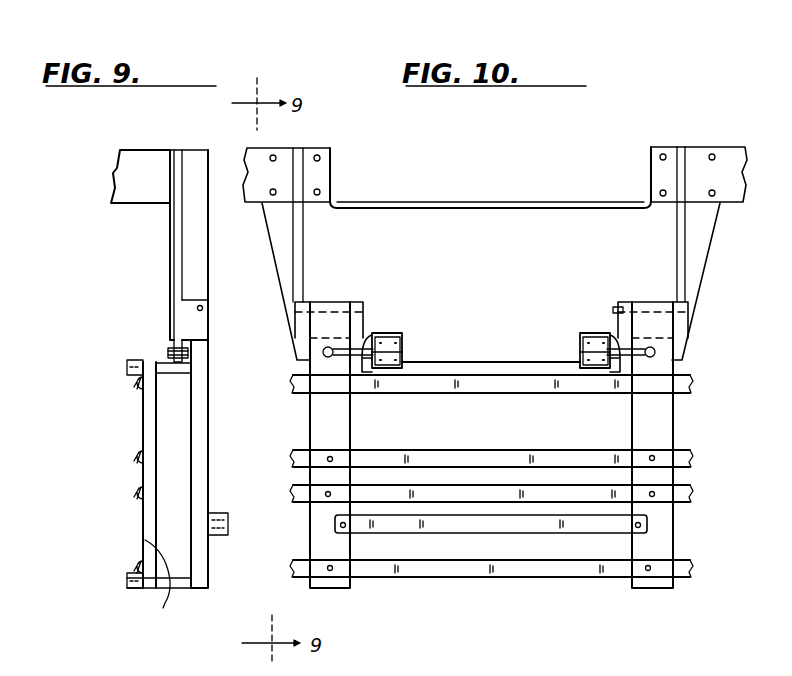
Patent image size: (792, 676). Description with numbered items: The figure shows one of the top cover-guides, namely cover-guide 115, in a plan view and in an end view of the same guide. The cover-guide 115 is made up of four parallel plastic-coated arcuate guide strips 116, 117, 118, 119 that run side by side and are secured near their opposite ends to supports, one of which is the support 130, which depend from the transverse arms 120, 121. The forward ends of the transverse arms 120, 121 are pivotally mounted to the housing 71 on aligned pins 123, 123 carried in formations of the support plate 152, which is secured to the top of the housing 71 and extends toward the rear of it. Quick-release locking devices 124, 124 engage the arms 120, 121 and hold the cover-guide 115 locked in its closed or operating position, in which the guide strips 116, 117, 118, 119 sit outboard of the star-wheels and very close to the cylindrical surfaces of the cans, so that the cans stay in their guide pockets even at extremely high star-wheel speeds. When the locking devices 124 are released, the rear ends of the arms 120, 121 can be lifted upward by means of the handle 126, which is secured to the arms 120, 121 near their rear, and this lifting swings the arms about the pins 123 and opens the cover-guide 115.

In FIG. 10, the housing 71 is at (515, 153).
In FIG. 9, the cover-guide 115 is at (133, 423).
In FIG. 10, the cover-guide 115 is at (523, 455).
In FIG. 9, the guide strip 116 is at (130, 567).
In FIG. 10, the guide strip 116 is at (470, 573).
In FIG. 9, the guide strip 117 is at (129, 493).
In FIG. 10, the guide strip 117 is at (481, 478).
In FIG. 9, the guide strip 118 is at (129, 458).
In FIG. 10, the guide strip 118 is at (487, 438).
In FIG. 9, the guide strip 119 is at (128, 383).
In FIG. 10, the guide strip 119 is at (580, 388).
In FIG. 9, the transverse arm 120 is at (209, 461).
In FIG. 10, the transverse arm 120 is at (352, 426).
In FIG. 10, the transverse arm 121 is at (638, 421).
In FIG. 9, the pin 123 is at (204, 309).
In FIG. 10, the pin 123 is at (368, 310).
In FIG. 10, the quick-release locking device 124 is at (370, 333).
In FIG. 10, the handle 126 is at (524, 533).
In FIG. 9, the support 130 is at (172, 583).
In FIG. 10, the support plate 152 is at (708, 285).